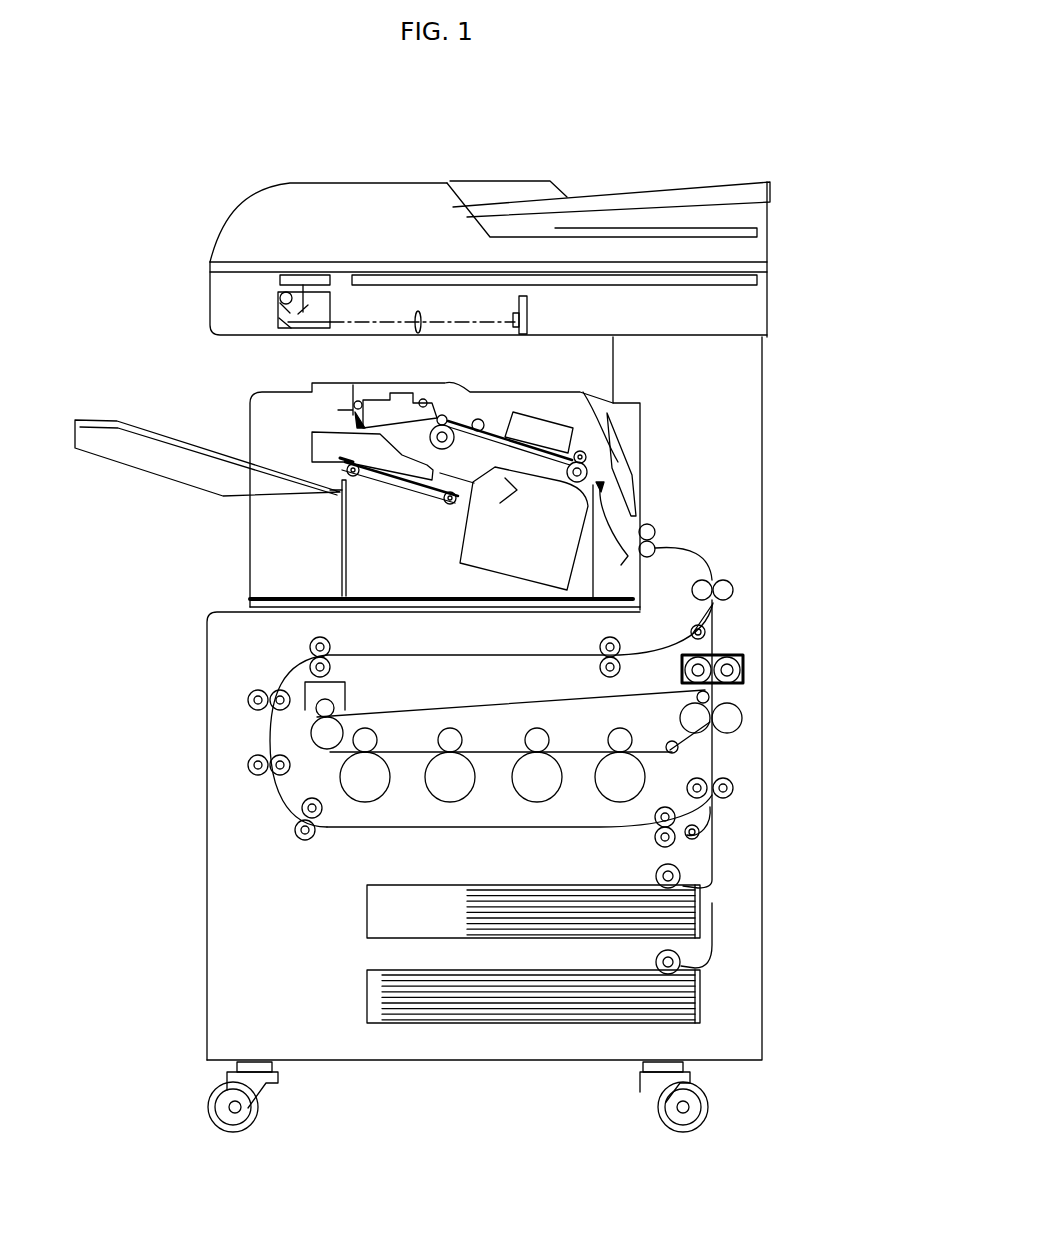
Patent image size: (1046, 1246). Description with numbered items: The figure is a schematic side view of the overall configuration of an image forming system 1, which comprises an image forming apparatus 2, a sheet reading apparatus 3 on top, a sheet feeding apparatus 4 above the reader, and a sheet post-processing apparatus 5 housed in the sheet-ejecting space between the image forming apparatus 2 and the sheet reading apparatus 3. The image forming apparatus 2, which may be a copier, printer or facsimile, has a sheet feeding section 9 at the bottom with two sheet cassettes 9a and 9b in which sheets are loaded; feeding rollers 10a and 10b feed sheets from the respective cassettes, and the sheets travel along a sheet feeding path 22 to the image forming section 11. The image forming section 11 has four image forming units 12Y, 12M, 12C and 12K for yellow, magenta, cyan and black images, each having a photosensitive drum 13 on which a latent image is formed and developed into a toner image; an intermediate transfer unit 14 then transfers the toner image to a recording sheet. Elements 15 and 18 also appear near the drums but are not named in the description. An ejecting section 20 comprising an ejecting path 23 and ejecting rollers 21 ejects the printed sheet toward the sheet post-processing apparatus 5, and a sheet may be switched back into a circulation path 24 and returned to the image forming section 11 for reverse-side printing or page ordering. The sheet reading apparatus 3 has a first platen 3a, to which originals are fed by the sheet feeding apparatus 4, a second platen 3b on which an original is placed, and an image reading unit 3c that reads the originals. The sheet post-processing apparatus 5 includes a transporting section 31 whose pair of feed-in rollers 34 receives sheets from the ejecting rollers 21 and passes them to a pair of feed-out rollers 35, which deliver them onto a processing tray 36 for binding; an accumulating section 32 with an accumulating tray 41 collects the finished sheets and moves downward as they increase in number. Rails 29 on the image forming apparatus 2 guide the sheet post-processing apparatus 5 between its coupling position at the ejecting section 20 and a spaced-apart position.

The image forming system 1 is at (163, 163).
The image forming apparatus 2 is at (736, 453).
The sheet reading apparatus 3 is at (735, 313).
The first platen 3a is at (327, 276).
The second platen 3b is at (592, 283).
The image reading unit 3c is at (278, 304).
The sheet feeding apparatus 4 is at (290, 183).
The sheet post-processing apparatus 5 is at (305, 537).
The sheet feeding section 9 is at (298, 890).
The sheet cassette 9a is at (367, 910).
The sheet cassette 9b is at (367, 996).
The feeding roller 10a is at (656, 876).
The feeding roller 10b is at (656, 963).
The image forming section 11 is at (255, 670).
The image forming unit 12Y is at (363, 803).
The image forming unit 12M is at (446, 803).
The image forming unit 12C is at (530, 804).
The image forming unit 12K is at (611, 806).
The photosensitive drum 13 is at (341, 781).
The intermediate transfer unit 14 is at (458, 712).
The primary transfer roller 15 is at (375, 745).
The secondary transfer roller pair 18 is at (697, 727).
The ejecting section 20 is at (730, 568).
The ejecting rollers 21 is at (648, 523).
The sheet feeding path 22 is at (713, 903).
The ejecting path 23 is at (708, 575).
The circulation path 24 is at (513, 655).
The rails 29 is at (500, 528).
The transporting section 31 is at (528, 444).
The accumulating section 32 is at (232, 436).
The feed-in rollers 34 is at (582, 447).
The feed-out rollers 35 is at (445, 418).
The processing tray 36 is at (395, 470).
The accumulating tray 41 is at (118, 423).